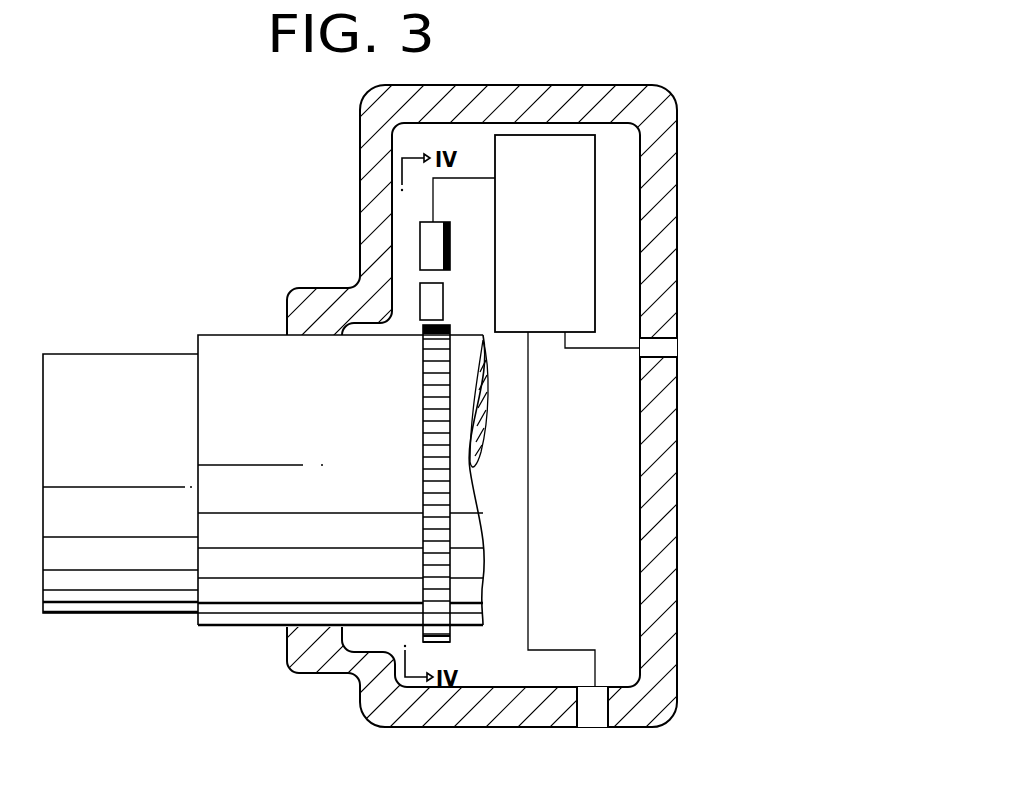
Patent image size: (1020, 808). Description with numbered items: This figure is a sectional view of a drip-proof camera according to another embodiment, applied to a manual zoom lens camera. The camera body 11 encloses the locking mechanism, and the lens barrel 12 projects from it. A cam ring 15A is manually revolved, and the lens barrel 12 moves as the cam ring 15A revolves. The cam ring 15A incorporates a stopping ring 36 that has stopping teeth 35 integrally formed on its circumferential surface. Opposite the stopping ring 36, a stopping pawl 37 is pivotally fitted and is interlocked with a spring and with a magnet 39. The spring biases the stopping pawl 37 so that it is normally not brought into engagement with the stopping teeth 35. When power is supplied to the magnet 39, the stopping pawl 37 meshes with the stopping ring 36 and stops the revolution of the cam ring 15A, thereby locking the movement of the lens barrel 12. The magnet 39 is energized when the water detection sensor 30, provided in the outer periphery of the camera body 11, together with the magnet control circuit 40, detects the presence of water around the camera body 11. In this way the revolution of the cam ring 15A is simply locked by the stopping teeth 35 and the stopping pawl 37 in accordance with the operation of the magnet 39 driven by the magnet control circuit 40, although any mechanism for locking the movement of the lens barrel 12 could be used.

The camera body 11 is at (660, 541).
The lens barrel 12 is at (138, 617).
The cam ring 15A is at (245, 627).
The water detection sensor 30 is at (665, 349).
The stopping teeth 35 is at (452, 638).
The stopping ring 36 is at (422, 460).
The stopping pawl 37 is at (443, 307).
The magnet 39 is at (420, 243).
The magnet control circuit 40 is at (595, 197).